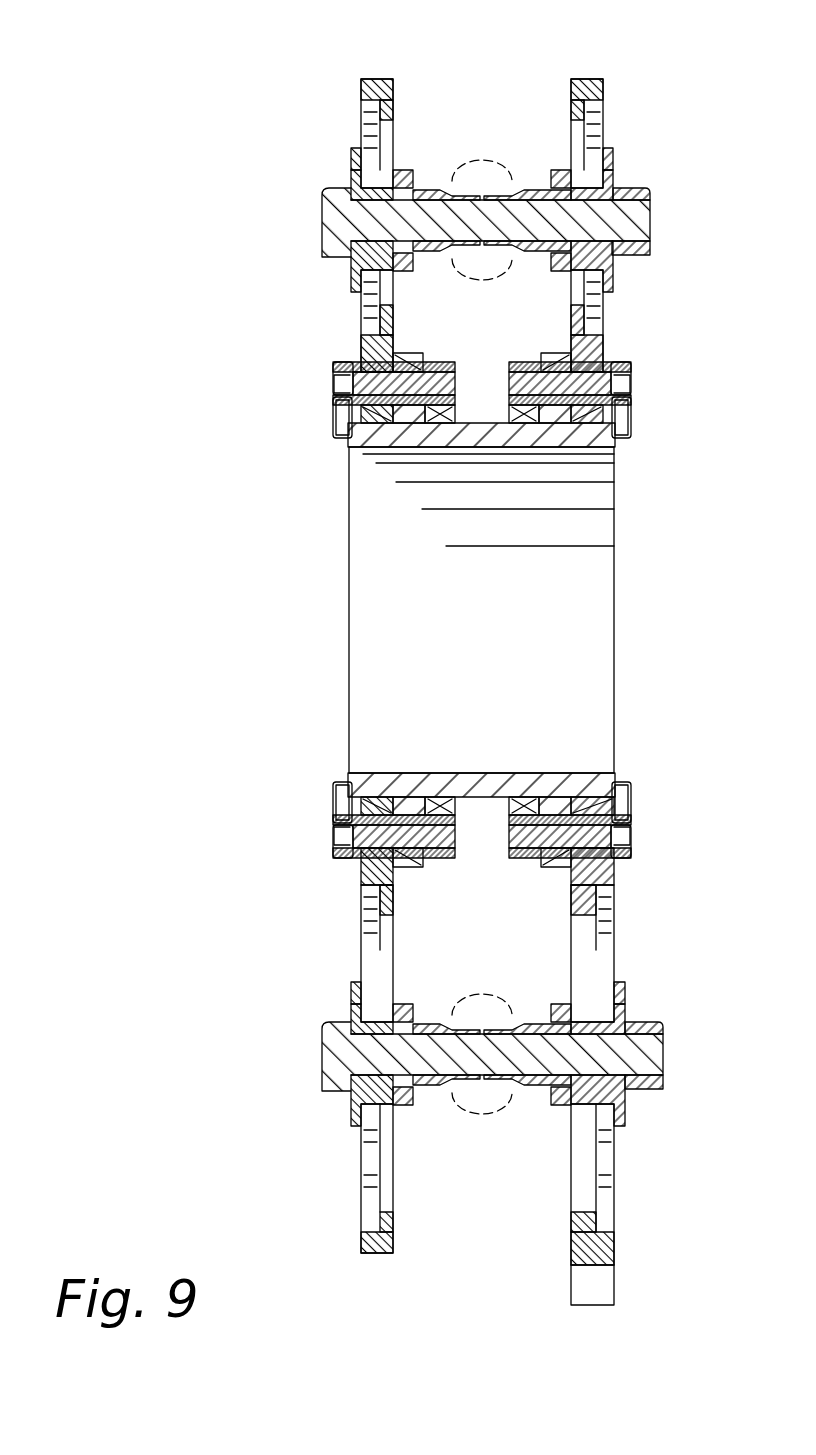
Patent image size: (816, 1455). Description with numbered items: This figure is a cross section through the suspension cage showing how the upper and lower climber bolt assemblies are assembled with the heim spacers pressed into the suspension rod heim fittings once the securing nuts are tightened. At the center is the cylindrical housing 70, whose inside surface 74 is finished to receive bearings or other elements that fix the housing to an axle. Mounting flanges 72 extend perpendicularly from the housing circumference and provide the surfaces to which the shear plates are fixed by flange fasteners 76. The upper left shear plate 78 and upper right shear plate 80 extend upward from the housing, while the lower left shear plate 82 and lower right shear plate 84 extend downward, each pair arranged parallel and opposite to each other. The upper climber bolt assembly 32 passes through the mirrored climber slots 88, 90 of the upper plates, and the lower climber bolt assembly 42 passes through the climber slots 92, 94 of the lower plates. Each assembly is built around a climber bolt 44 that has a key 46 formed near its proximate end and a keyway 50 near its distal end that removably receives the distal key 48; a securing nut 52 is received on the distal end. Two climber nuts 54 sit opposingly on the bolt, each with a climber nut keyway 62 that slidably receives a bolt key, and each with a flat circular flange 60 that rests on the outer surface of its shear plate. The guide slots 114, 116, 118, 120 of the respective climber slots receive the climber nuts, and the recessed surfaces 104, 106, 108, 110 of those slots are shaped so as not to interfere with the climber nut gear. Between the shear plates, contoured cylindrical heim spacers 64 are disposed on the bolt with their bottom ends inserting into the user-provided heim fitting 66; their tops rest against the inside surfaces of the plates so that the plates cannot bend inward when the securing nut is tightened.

The climber bolt assembly 32 is at (302, 243).
The climber bolt assembly 42 is at (302, 1078).
The climber bolt 44 is at (322, 214).
The key 46 is at (365, 192).
The distal key 48 is at (598, 192).
The keyway 50 is at (652, 194).
The securing nut 52 is at (650, 248).
The climber nut 54 is at (345, 266).
The flange 60 is at (356, 152).
The climber nut keyway 62 is at (320, 190).
The heim spacer 64 is at (404, 170).
The heim fitting 66 is at (474, 160).
The cylindrical housing 70 is at (341, 573).
The mounting flange 72 is at (545, 353).
The inside surface 74 is at (480, 772).
The flange fastener 76 is at (333, 375).
The upper left shear plate 78 is at (375, 70).
The upper right shear plate 80 is at (590, 70).
The lower left shear plate 82 is at (373, 1262).
The lower right shear plate 84 is at (591, 1314).
The climber slot 88 is at (370, 332).
The climber slot 90 is at (597, 332).
The climber slot 92 is at (363, 878).
The climber slot 94 is at (605, 878).
The recessed surface 104 is at (378, 113).
The recessed surface 106 is at (590, 113).
The recessed surface 108 is at (377, 1220).
The recessed surface 110 is at (610, 1222).
The guide slot 114 is at (390, 286).
The guide slot 116 is at (575, 286).
The guide slot 118 is at (388, 938).
The guide slot 120 is at (578, 938).